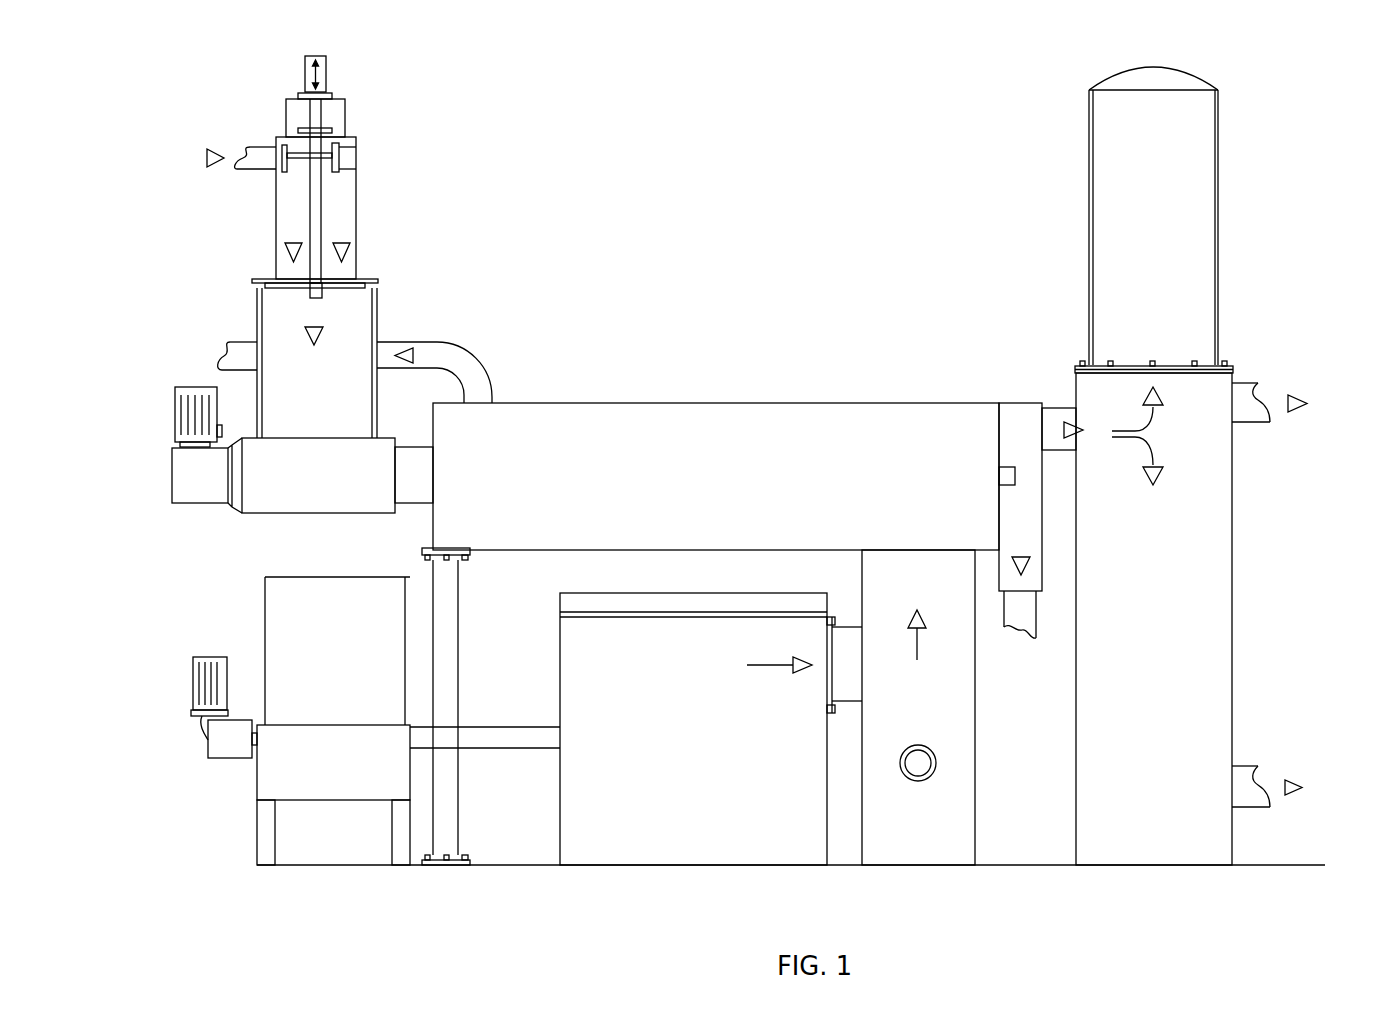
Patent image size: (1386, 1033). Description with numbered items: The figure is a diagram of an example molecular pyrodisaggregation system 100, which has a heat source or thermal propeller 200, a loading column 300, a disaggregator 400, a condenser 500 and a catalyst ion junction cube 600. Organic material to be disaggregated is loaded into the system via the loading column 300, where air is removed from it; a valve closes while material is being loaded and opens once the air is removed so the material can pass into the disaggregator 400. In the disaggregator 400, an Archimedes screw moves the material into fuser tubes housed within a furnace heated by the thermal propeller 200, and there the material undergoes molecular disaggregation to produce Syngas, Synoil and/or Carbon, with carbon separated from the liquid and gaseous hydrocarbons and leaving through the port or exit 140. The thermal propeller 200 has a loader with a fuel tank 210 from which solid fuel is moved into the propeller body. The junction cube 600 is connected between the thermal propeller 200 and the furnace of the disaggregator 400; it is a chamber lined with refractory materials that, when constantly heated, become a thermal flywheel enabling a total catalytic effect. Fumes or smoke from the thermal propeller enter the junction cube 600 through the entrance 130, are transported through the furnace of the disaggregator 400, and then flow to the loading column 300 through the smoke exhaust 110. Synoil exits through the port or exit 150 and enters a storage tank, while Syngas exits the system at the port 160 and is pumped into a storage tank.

The molecular pyrodisaggregation system 100 is at (552, 107).
The smoke exhaust 110 is at (462, 367).
The entrance 130 is at (918, 763).
The port or exit 140 is at (1013, 623).
The port or exit 150 is at (1253, 780).
The port 160 is at (1268, 413).
The thermal propeller 200 is at (658, 884).
The fuel tank 210 is at (283, 558).
The loading column 300 is at (250, 252).
The disaggregator 400 is at (770, 378).
The condenser 500 is at (1250, 197).
The catalyst ion junction cube 600 is at (957, 850).